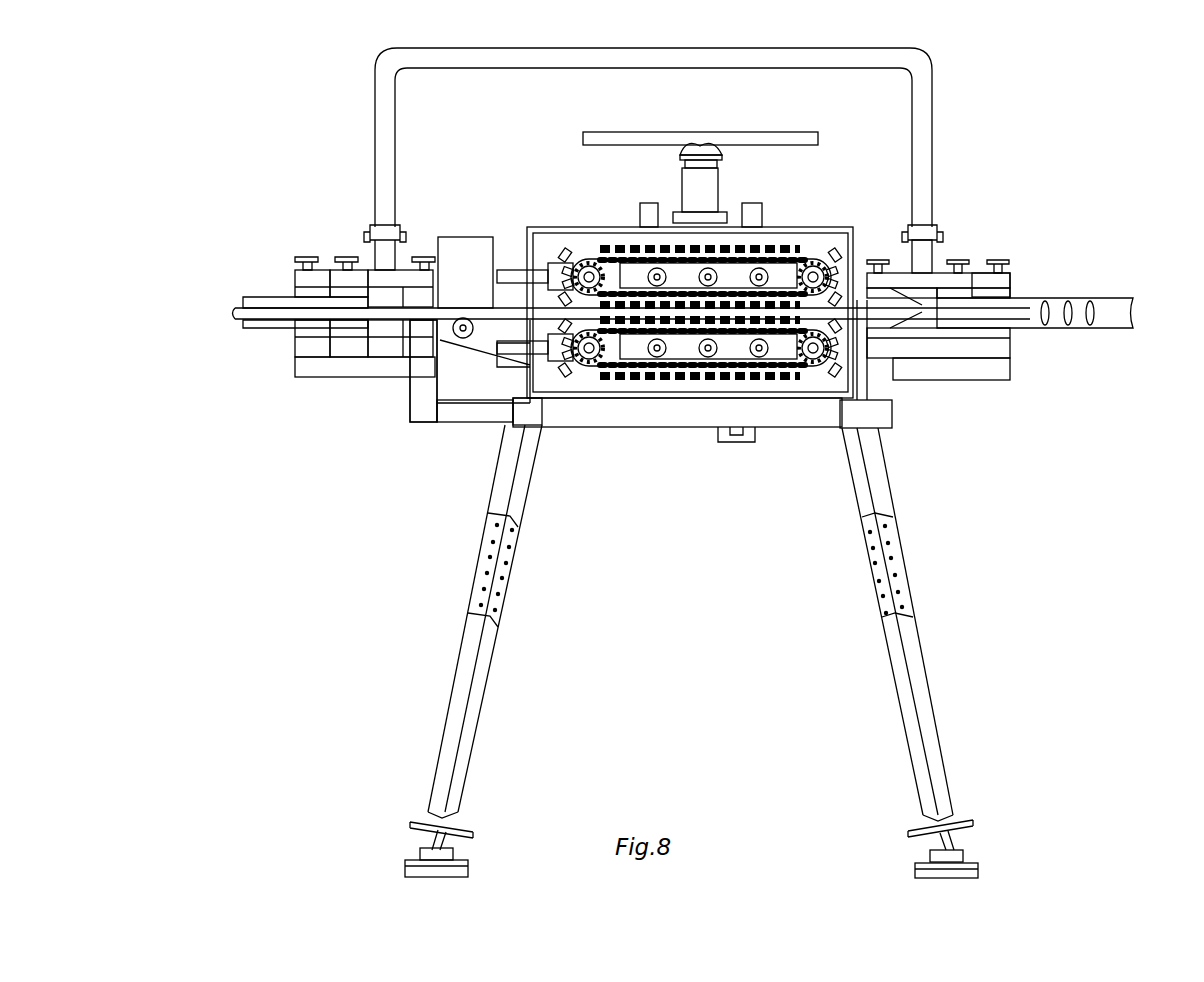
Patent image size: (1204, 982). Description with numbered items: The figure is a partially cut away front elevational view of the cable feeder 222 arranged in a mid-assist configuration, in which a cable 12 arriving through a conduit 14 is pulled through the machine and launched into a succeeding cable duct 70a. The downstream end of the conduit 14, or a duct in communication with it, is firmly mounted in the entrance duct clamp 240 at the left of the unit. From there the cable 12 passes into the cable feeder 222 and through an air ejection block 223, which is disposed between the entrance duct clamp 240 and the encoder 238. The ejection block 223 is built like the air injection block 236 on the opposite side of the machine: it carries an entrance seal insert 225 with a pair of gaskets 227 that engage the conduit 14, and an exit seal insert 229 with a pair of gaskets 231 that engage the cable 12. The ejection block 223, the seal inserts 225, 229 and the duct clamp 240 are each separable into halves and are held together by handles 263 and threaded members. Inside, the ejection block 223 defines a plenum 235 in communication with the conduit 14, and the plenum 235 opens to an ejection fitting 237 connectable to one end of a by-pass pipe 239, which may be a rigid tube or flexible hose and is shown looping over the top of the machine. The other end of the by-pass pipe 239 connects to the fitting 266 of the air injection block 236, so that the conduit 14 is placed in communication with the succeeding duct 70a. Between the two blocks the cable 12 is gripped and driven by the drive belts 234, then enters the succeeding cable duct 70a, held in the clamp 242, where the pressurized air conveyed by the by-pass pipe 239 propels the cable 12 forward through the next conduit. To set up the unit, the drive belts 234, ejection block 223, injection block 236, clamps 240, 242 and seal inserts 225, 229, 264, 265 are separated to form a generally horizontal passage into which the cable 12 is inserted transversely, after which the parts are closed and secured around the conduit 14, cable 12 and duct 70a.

The cable 12 is at (268, 330).
The conduit 14 is at (265, 320).
The succeeding cable duct 70a is at (1100, 300).
The cable feeder 222 is at (962, 131).
The air ejection block 223 is at (365, 272).
The entrance seal insert 225 is at (353, 350).
The gaskets 227 is at (330, 340).
The exit seal insert 229 is at (380, 345).
The gaskets 231 is at (420, 320).
The drive belts 234 is at (797, 250).
The plenum 235 is at (400, 285).
The air injection block 236 is at (935, 262).
The ejection fitting 237 is at (383, 232).
The encoder 238 is at (465, 240).
The by-pass pipe 239 is at (583, 68).
The entrance duct clamp 240 is at (296, 274).
The clamp 242 is at (1012, 282).
The handles 263 is at (347, 258).
The seal insert 264 is at (892, 330).
The seal insert 265 is at (960, 340).
The fitting 266 is at (940, 232).